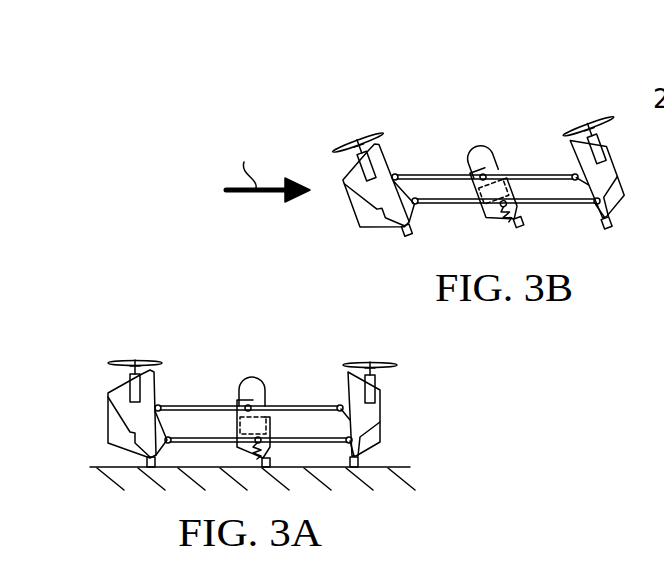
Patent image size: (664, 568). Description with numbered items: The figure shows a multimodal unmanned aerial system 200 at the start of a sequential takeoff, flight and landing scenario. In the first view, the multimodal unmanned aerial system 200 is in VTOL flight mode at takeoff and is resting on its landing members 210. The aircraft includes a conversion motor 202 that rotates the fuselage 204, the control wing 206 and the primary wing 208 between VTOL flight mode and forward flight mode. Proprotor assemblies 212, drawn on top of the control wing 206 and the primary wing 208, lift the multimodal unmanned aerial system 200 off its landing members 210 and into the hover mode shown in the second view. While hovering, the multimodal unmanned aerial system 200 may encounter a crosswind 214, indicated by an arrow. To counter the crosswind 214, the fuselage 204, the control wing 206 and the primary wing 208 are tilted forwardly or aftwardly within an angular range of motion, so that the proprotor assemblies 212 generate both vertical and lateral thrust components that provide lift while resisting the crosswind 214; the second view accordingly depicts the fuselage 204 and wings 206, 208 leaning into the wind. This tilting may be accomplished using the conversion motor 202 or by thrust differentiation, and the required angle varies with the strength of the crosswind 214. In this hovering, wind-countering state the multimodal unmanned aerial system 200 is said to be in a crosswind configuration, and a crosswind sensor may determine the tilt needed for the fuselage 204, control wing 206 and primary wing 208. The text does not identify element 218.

In FIG. 3A, the multimodal unmanned aerial system 200 is at (245, 400).
In FIG. 3B, the multimodal unmanned aerial system 200 is at (473, 141).
In FIG. 3A, the conversion motor 202 is at (285, 470).
In FIG. 3B, the conversion motor 202 is at (496, 223).
In FIG. 3A, the fuselage 204 is at (235, 428).
In FIG. 3B, the fuselage 204 is at (512, 190).
In FIG. 3A, the control wing 206 is at (396, 414).
In FIG. 3B, the control wing 206 is at (610, 214).
In FIG. 3A, the primary wing 208 is at (102, 449).
In FIG. 3B, the primary wing 208 is at (368, 197).
In FIG. 3A, the landing members 210 is at (150, 470).
In FIG. 3B, the landing members 210 is at (402, 232).
In FIG. 3A, the proprotor assemblies 212 is at (379, 381).
In FIG. 3B, the proprotor assemblies 212 is at (388, 155).
In FIG. 3B, the crosswind 214 is at (268, 167).
In FIG. 3A, the sensor dome 218 is at (255, 377).
In FIG. 3B, the sensor dome 218 is at (479, 145).